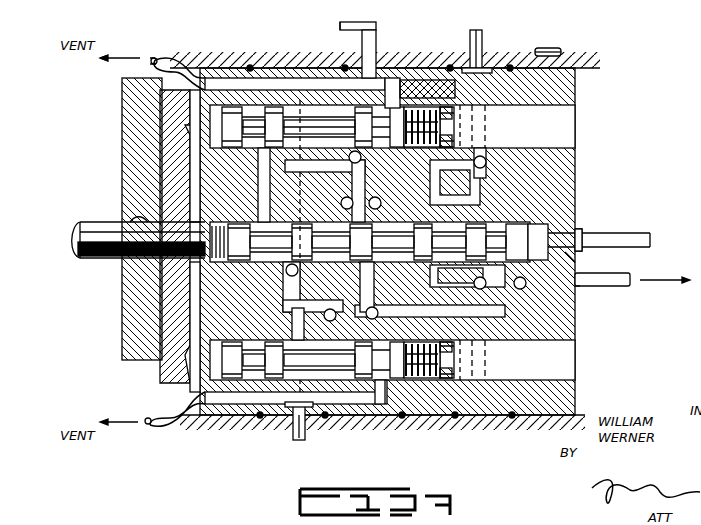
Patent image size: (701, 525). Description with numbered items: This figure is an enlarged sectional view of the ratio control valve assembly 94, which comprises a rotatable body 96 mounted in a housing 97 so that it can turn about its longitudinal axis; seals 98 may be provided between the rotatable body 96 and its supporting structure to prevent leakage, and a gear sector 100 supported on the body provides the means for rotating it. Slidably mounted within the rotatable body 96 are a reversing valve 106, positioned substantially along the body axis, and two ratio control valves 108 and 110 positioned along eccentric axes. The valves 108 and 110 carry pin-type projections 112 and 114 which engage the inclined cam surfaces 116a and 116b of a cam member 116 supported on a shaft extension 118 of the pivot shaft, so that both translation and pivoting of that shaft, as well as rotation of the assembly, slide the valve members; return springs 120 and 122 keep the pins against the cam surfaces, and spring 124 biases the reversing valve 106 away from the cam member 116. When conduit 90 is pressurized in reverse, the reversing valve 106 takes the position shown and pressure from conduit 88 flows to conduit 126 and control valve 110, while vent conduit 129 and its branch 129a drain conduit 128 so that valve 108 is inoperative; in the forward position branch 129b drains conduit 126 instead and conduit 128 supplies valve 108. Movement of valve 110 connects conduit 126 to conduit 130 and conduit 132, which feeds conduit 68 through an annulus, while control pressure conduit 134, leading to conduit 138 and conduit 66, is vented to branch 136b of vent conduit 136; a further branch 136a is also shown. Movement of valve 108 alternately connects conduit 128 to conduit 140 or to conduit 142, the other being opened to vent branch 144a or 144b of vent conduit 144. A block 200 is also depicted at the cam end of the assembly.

The conduit 66 is at (362, 24).
The conduit 68 is at (292, 438).
The pressure conduit 88 is at (484, 40).
The conduit 90 is at (612, 233).
The ratio control valve assembly 94 is at (257, 45).
The rotatable body 96 is at (565, 175).
The housing 97 is at (588, 58).
The seals 98 is at (272, 66).
The gear sector 100 is at (552, 50).
The reversing valve 106 is at (330, 262).
The ratio control valve 108 is at (392, 124).
The ratio control valve 110 is at (392, 360).
The pin-type projection 112 is at (176, 140).
The pin-type projection 114 is at (194, 340).
The cam member 116 is at (160, 372).
The cam surface 116a is at (168, 150).
The cam surface 116b is at (178, 335).
The shaft extension 118 is at (106, 222).
The return spring 120 is at (440, 106).
The return spring 122 is at (428, 378).
The spring 124 is at (212, 262).
The conduit 126 is at (328, 309).
The conduit 128 is at (380, 191).
The vent conduit 129 is at (598, 288).
The vent branch conduit 129a is at (445, 287).
The vent branch conduit 129b is at (570, 255).
The conduit 130 is at (282, 308).
The conduit 132 is at (286, 270).
The control pressure conduit 134 is at (352, 320).
The vent conduit 136 is at (168, 426).
The lower vent passage 136a is at (254, 405).
The branch 136b is at (388, 418).
The conduit 138 is at (381, 203).
The conduit 140 is at (362, 157).
The conduit 142 is at (262, 172).
The vent conduit 144 is at (172, 60).
The vent branch 144a is at (252, 66).
The vent branch 144b is at (424, 89).
The mounting block 200 is at (122, 112).